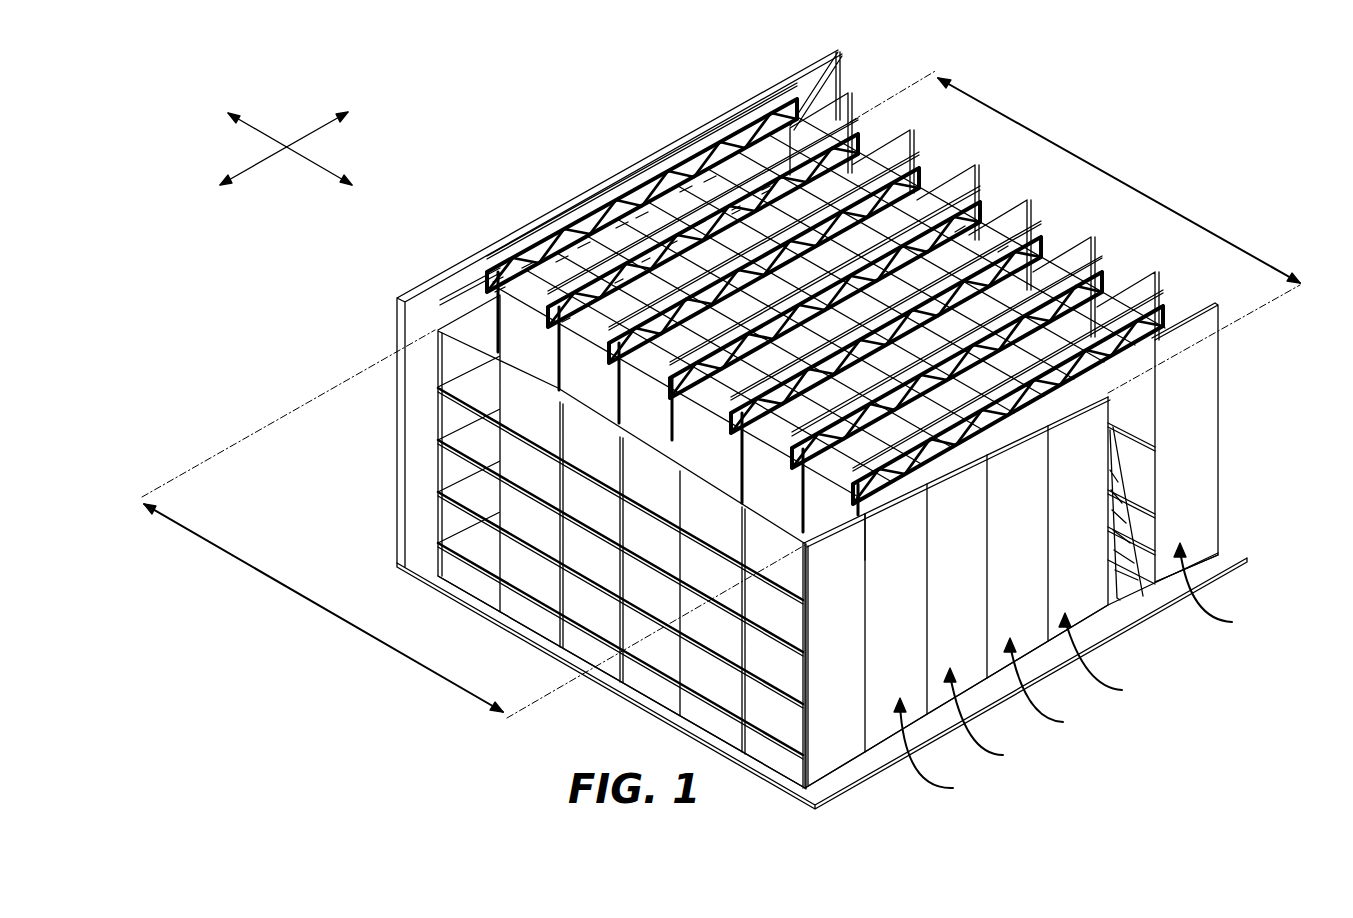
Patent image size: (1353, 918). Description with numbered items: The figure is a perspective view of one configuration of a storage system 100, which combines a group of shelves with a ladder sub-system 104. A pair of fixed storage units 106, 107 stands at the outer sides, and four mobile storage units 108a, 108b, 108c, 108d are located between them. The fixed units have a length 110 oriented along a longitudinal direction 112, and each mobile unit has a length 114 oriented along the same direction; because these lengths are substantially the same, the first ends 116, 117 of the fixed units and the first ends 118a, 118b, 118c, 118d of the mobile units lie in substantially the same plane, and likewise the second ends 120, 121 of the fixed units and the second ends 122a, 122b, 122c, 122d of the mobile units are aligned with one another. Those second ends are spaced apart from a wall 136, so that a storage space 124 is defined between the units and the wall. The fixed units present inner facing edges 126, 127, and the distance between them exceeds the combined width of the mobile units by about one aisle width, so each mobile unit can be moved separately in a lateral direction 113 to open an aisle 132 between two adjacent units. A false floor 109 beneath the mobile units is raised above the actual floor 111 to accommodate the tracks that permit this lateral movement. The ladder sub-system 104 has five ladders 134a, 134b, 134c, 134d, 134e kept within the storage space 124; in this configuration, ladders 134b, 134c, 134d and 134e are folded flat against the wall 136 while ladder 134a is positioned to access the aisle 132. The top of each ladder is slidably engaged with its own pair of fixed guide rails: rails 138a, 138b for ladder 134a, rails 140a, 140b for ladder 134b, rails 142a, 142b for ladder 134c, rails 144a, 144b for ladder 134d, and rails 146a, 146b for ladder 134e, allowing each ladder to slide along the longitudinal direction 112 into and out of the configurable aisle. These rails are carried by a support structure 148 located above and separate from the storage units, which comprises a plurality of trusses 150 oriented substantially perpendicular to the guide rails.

The storage system 100 is at (490, 140).
The ladder sub-system 104 is at (824, 375).
The fixed storage unit 106 is at (1219, 588).
The fixed storage unit 107 is at (840, 745).
The mobile storage unit 108a is at (1112, 658).
The mobile storage unit 108b is at (1055, 685).
The mobile storage unit 108c is at (994, 716).
The mobile storage unit 108d is at (946, 747).
The false floor 109 is at (1085, 627).
The length 110 is at (473, 524).
The actual floor 111 is at (850, 805).
The longitudinal direction 112 is at (305, 160).
The lateral direction 113 is at (312, 132).
The length 114 is at (1075, 231).
The first end 116 is at (1203, 337).
The first end 117 is at (840, 635).
The first end 118a is at (1062, 437).
The first end 118b is at (1012, 467).
The first end 118c is at (950, 498).
The first end 118d is at (895, 520).
The second end 120 is at (822, 112).
The second end 121 is at (470, 300).
The second end 122a is at (708, 182).
The second end 122b is at (638, 220).
The second end 122c is at (580, 250).
The second end 122d is at (527, 270).
The storage space 124 is at (755, 170).
The inner facing edge 126 is at (1133, 380).
The inner facing edge 127 is at (878, 555).
The aisle 132 is at (1130, 430).
The ladder 134a is at (1120, 400).
The ladder 134b is at (684, 190).
The ladder 134c is at (620, 228).
The ladder 134d is at (560, 262).
The ladder 134e is at (497, 280).
The wall 136 is at (437, 290).
The guide rail 138a is at (1000, 250).
The guide rail 138b is at (957, 230).
The guide rail 140a is at (768, 192).
The guide rail 140b is at (738, 210).
The guide rail 142a is at (700, 225).
The guide rail 142b is at (672, 245).
The guide rail 144a is at (645, 262).
The guide rail 144b is at (618, 283).
The guide rail 146a is at (593, 302).
The guide rail 146b is at (565, 322).
The support structure 148 is at (800, 95).
The truss 150 is at (793, 95).